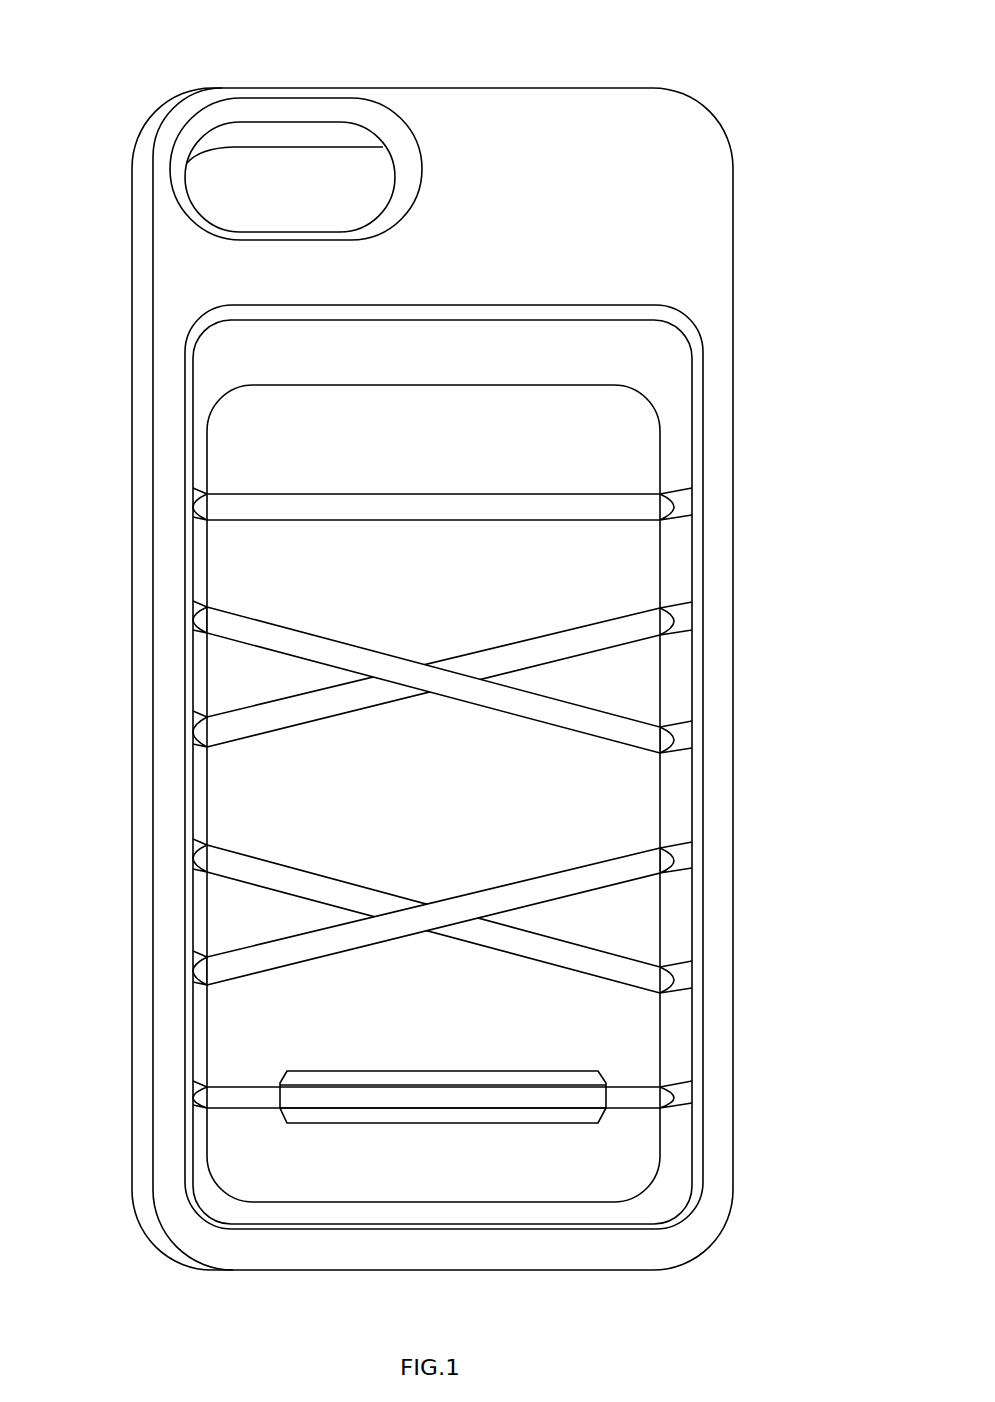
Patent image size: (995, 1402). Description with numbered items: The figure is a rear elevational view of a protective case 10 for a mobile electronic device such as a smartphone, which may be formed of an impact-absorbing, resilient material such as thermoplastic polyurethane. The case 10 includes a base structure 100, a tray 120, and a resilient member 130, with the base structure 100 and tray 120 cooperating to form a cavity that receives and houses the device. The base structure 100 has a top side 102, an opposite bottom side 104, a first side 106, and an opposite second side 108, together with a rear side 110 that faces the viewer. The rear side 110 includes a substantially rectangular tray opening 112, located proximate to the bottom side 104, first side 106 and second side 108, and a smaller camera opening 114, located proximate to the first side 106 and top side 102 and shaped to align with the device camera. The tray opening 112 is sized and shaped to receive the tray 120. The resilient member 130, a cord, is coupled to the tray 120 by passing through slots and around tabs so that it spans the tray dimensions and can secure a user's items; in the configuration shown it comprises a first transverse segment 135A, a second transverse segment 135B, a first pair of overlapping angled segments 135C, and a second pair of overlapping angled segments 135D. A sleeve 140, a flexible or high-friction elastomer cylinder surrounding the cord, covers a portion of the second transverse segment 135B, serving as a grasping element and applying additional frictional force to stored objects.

The protective case 10 is at (798, 93).
The base structure 100 is at (713, 242).
The top side 102 is at (557, 67).
The bottom side 104 is at (323, 1283).
The first side 106 is at (110, 707).
The second side 108 is at (760, 672).
The rear side 110 is at (567, 222).
The tray opening 112 is at (178, 422).
The camera opening 114 is at (297, 97).
The tray 120 is at (618, 455).
The resilient member 130 is at (613, 968).
The first transverse segment 135A is at (415, 509).
The second transverse segment 135B is at (240, 1095).
The first pair of angled segments 135C is at (428, 662).
The second pair of angled segments 135D is at (432, 900).
The sleeve 140 is at (465, 1123).